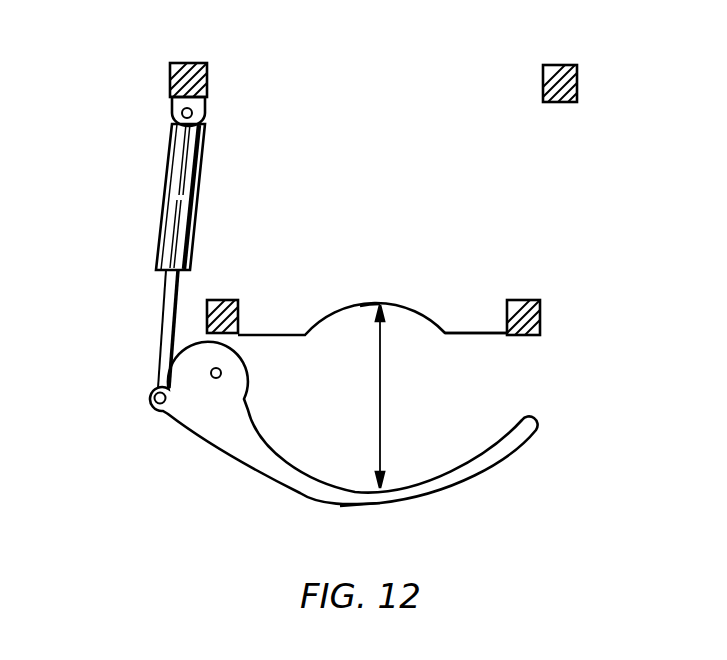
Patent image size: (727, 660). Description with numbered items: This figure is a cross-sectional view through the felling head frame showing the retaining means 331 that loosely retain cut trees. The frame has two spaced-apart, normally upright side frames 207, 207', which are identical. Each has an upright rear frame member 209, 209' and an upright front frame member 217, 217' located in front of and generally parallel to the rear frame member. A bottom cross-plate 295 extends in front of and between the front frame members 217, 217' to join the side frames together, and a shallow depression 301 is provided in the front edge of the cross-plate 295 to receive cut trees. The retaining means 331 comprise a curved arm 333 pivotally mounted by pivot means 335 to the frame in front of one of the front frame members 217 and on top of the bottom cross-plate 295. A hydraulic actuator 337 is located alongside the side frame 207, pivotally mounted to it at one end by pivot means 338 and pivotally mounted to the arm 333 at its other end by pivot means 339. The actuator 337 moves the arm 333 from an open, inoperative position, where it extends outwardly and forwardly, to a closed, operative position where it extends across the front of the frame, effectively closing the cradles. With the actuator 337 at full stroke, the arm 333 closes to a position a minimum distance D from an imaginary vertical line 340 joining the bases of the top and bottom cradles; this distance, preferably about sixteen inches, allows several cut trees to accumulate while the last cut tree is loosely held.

The rear frame member 209 is at (225, 70).
The rear frame member 209' is at (601, 75).
The side frame 207 is at (266, 198).
The side frame 207' is at (513, 201).
The front frame member 217 is at (256, 305).
The front frame member 217' is at (564, 312).
The pivot means 338 is at (178, 108).
The hydraulic actuator 337 is at (172, 187).
The pivot means 339 is at (150, 414).
The pivot means 335 is at (221, 373).
The retaining means 331 is at (267, 487).
The curved arm 333 is at (356, 507).
The imaginary vertical line 340 is at (380, 305).
The shallow depression 301 is at (432, 326).
The bottom cross-plate 295 is at (485, 336).
The minimum distance D is at (378, 412).